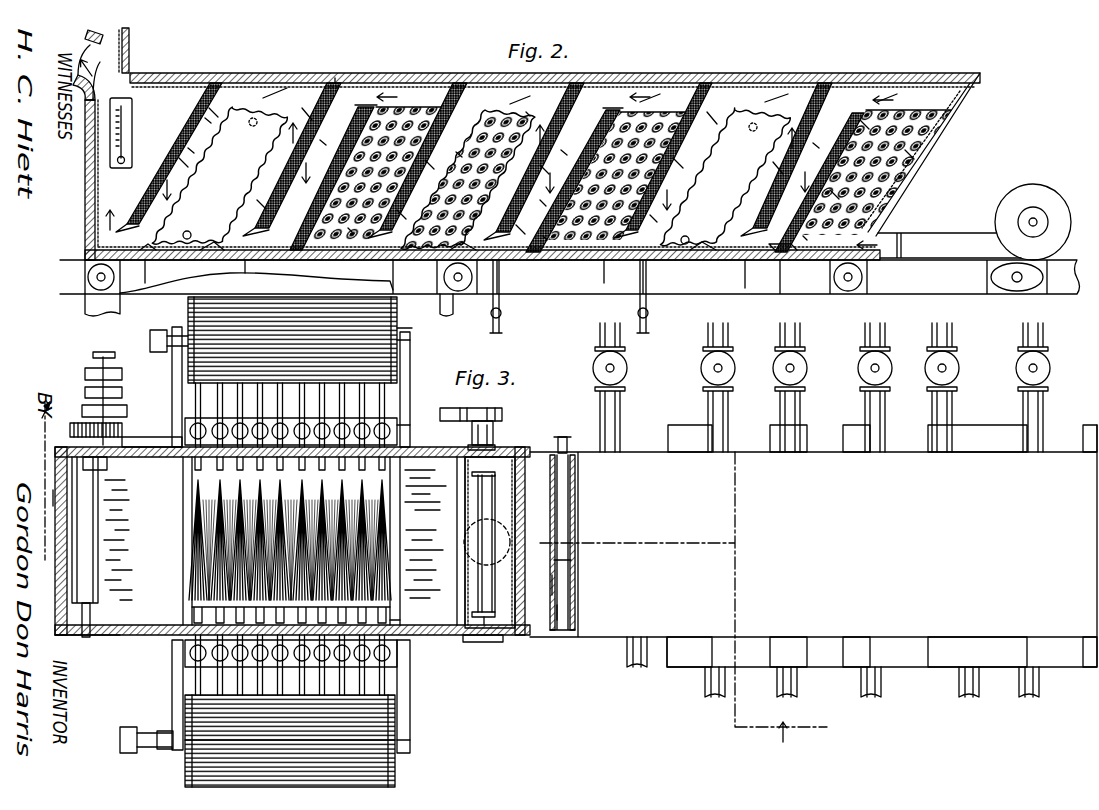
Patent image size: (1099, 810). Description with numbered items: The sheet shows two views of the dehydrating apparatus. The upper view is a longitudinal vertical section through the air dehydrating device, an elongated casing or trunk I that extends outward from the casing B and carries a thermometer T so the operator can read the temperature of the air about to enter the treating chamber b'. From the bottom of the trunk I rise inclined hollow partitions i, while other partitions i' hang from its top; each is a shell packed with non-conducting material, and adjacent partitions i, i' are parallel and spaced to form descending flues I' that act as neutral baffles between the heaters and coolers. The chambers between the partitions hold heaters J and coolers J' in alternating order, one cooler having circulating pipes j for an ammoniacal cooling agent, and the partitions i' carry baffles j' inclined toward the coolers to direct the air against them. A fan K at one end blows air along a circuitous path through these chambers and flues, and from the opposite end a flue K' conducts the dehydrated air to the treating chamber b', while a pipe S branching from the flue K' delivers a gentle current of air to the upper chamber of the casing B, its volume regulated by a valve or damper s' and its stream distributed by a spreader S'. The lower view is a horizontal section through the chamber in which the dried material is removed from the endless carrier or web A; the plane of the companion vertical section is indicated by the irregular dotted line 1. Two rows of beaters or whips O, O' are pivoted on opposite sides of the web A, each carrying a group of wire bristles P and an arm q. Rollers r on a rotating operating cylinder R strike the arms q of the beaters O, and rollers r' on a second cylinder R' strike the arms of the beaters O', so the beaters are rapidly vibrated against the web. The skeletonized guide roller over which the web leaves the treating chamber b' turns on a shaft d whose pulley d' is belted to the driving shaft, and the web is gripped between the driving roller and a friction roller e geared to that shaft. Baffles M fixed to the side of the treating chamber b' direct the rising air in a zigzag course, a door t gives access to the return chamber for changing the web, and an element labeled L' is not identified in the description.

In FIG. 2, the flue K' is at (120, 54).
In FIG. 2, the pipe S is at (146, 27).
In FIG. 2, the thermometer T is at (127, 100).
In FIG. 2, the casing or trunk I is at (515, 189).
In FIG. 3, the casing or trunk I is at (813, 546).
In FIG. 2, the descending flue I' is at (533, 214).
In FIG. 2, the heater J is at (638, 173).
In FIG. 2, the cooler J' is at (471, 136).
In FIG. 2, the partition i is at (571, 233).
In FIG. 2, the partition i' is at (582, 133).
In FIG. 2, the circulating pipe j is at (480, 191).
In FIG. 2, the baffle j' is at (545, 125).
In FIG. 2, the fan K is at (974, 195).
In FIG. 3, the operating cylinder R is at (292, 541).
In FIG. 3, the cylinder R' is at (141, 553).
In FIG. 3, the roller r is at (417, 330).
In FIG. 3, the roller r' is at (310, 759).
In FIG. 3, the arm q is at (388, 395).
In FIG. 3, the beater O is at (412, 435).
In FIG. 3, the beater O' is at (414, 602).
In FIG. 3, the group of bristles P is at (222, 546).
In FIG. 3, the treating chamber b' is at (516, 517).
In FIG. 3, the endless carrier A is at (458, 518).
In FIG. 3, the casing B is at (125, 638).
In FIG. 3, the shaft d is at (492, 523).
In FIG. 3, the pulley d' is at (506, 417).
In FIG. 3, the friction roller e is at (102, 530).
In FIG. 3, the door t is at (53, 498).
In FIG. 3, the baffle M is at (562, 494).
In FIG. 3, the tube lining L' is at (585, 561).
In FIG. 3, the spreader S' is at (578, 589).
In FIG. 3, the valve or damper s' is at (585, 613).
In FIG. 3, the section line 1 is at (691, 597).